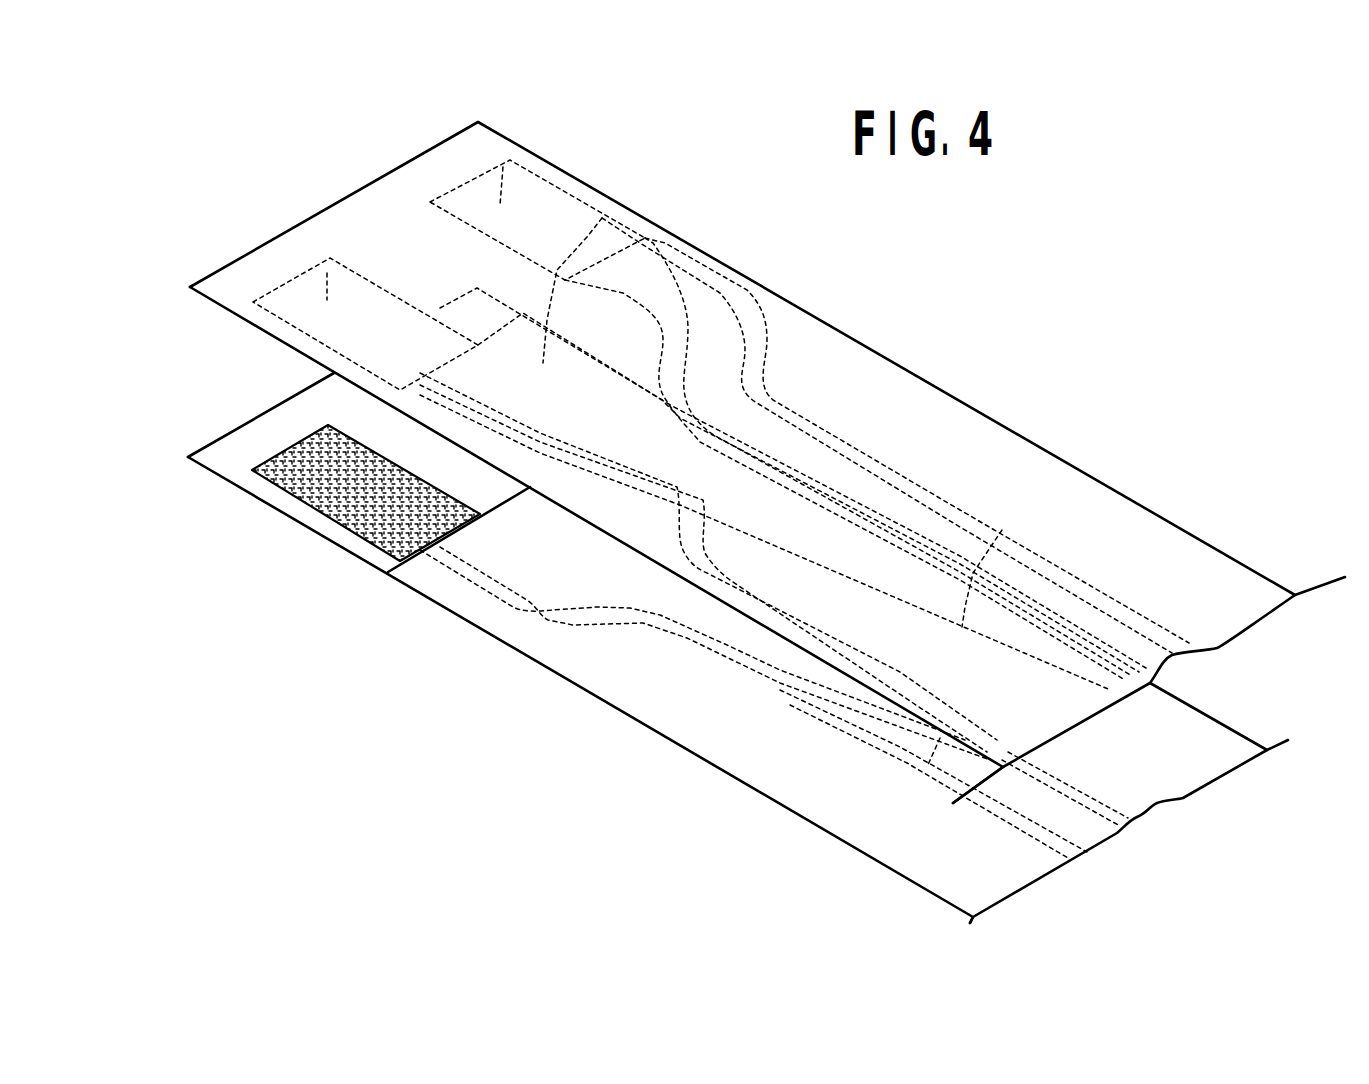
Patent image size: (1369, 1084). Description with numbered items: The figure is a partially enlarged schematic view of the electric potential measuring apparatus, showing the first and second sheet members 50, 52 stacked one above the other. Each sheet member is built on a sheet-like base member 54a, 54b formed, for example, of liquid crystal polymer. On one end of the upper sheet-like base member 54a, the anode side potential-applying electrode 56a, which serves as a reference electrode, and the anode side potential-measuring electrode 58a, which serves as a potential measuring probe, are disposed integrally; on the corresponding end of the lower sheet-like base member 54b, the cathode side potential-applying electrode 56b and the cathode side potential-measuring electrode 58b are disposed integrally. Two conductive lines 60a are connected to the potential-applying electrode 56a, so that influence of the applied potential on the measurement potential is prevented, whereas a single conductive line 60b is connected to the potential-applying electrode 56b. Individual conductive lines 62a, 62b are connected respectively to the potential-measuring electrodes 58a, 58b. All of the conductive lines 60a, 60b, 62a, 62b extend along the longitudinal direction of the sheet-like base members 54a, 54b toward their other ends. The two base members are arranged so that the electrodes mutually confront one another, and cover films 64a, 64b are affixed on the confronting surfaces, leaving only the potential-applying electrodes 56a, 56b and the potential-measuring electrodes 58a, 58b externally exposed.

The first sheet member 50 is at (1074, 444).
The second sheet member 52 is at (663, 740).
The sheet-like base member 54a is at (218, 314).
The sheet-like base member 54b is at (229, 462).
The anode side potential-applying electrode 56a is at (503, 167).
The cathode side potential-applying electrode 56b is at (602, 218).
The anode side potential-measuring electrode 58a is at (313, 257).
The cathode side potential-measuring electrode 58b is at (293, 455).
The conductive lines 60a is at (907, 527).
The conductive line 60b is at (810, 637).
The conductive line 62a is at (1002, 530).
The conductive line 62b is at (927, 767).
The cover film 64a is at (800, 327).
The cover film 64b is at (507, 620).